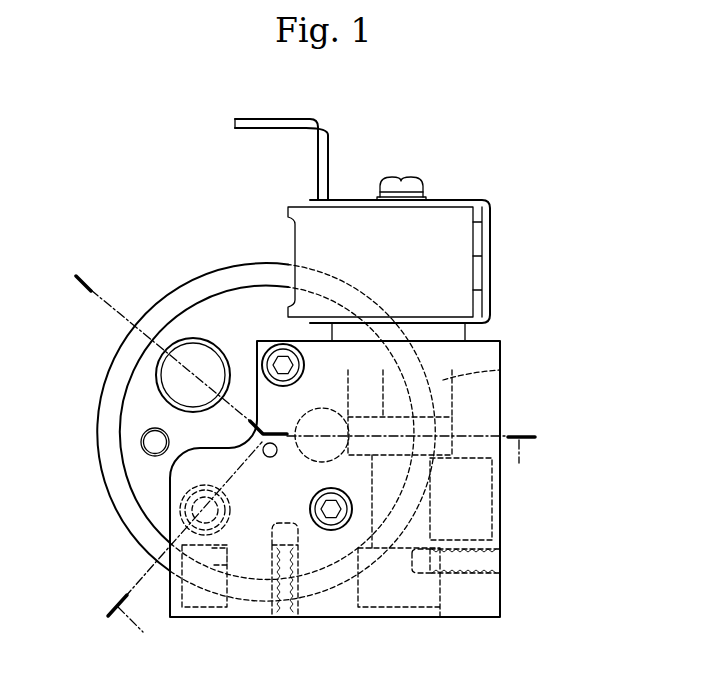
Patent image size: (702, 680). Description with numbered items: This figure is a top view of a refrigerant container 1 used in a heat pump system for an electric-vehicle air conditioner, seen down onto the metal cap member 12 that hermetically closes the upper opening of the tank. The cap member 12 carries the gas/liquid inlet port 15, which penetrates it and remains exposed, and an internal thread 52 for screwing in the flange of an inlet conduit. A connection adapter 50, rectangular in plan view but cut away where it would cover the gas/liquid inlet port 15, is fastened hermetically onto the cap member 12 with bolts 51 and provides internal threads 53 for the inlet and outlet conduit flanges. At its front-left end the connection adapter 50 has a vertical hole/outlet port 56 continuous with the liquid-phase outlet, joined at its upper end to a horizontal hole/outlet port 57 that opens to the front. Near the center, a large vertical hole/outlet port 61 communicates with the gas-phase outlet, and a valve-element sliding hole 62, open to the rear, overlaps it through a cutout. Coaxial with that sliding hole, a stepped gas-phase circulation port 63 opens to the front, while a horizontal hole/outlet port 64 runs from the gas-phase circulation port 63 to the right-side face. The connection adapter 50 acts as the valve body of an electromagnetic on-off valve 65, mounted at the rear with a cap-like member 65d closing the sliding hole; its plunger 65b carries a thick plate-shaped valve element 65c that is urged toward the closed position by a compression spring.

The refrigerant container 1 is at (135, 183).
The cap member 12 is at (250, 262).
The gas/liquid inlet port 15 is at (191, 338).
The connection adapter 50 is at (502, 387).
The bolt 51 is at (300, 364).
The internal thread 52 is at (141, 441).
The internal thread 53 is at (482, 573).
The vertical hole/outlet port 56 is at (180, 512).
The horizontal hole/outlet port 57 is at (225, 551).
The vertical hole/outlet port 61 is at (308, 418).
The valve-element sliding hole 62 is at (503, 360).
The gas-phase circulation port 63 is at (380, 494).
The horizontal hole/outlet port 64 is at (450, 545).
The on-off valve 65 is at (494, 217).
The plunger 65b is at (383, 393).
The valve element 65c is at (456, 418).
The cap-like member 65d is at (470, 332).